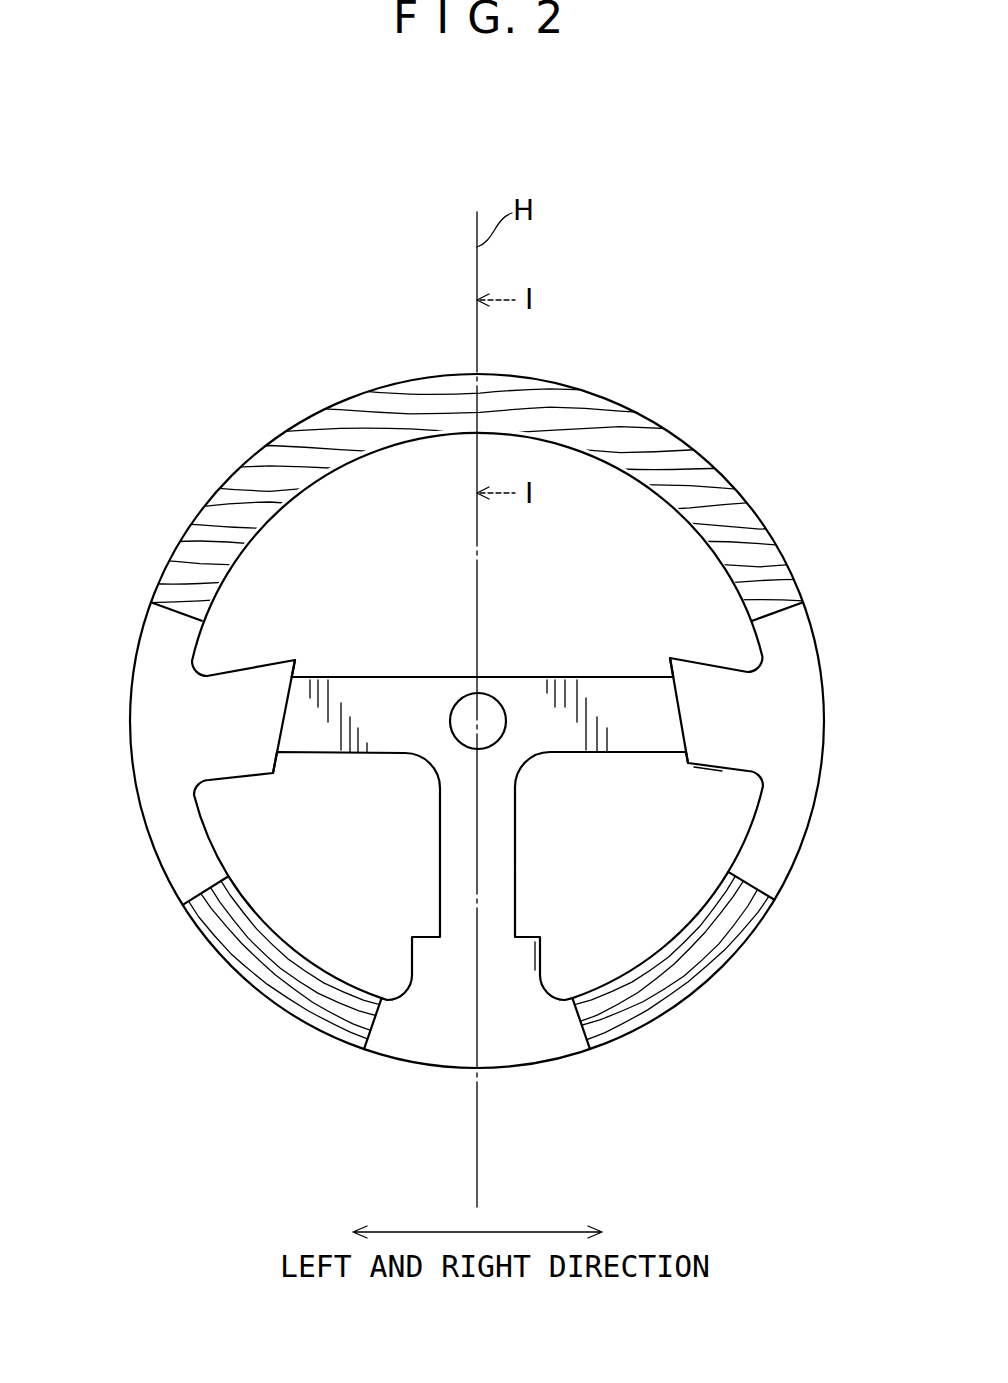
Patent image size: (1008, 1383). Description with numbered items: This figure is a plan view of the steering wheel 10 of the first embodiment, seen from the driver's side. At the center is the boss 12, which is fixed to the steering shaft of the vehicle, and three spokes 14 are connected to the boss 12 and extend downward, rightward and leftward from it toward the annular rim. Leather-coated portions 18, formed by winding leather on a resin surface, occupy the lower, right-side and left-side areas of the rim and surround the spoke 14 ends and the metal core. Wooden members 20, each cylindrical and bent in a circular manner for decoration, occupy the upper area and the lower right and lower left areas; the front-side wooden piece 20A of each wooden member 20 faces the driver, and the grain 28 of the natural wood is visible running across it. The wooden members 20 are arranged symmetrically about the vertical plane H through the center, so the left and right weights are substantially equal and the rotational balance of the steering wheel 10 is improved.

The steering wheel 10 is at (256, 246).
The boss 12 is at (517, 683).
The spoke 14 is at (345, 686).
The leather-coated portion 18 is at (133, 697).
The wooden member 20 is at (725, 454).
The wooden piece 20A is at (262, 455).
The grain 28 is at (620, 418).